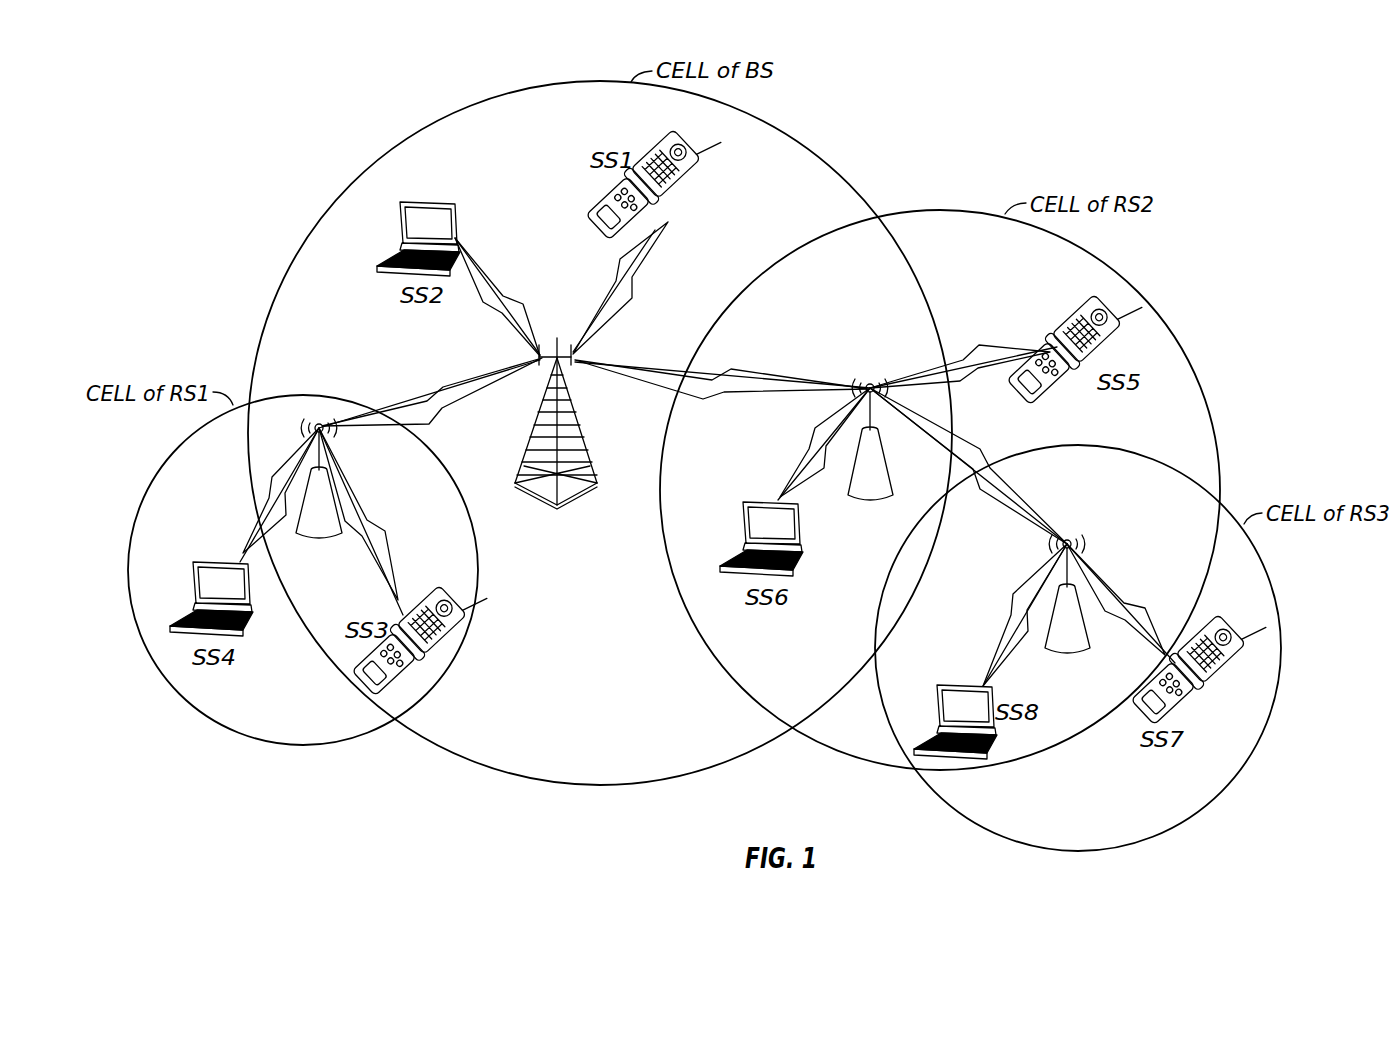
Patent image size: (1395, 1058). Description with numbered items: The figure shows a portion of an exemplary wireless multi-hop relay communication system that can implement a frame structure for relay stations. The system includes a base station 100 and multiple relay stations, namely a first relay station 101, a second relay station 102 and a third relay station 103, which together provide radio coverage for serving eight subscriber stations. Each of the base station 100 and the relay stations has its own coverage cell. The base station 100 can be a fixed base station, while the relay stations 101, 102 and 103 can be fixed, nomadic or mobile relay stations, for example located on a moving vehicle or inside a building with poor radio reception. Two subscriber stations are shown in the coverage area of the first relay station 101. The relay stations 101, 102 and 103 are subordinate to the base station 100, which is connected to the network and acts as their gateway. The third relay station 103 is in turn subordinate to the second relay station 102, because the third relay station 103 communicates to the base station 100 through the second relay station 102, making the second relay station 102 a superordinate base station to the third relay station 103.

The base station 100 is at (579, 417).
The relay station RS1 101 is at (340, 503).
The relay station RS2 102 is at (890, 468).
The relay station RS3 103 is at (1083, 606).